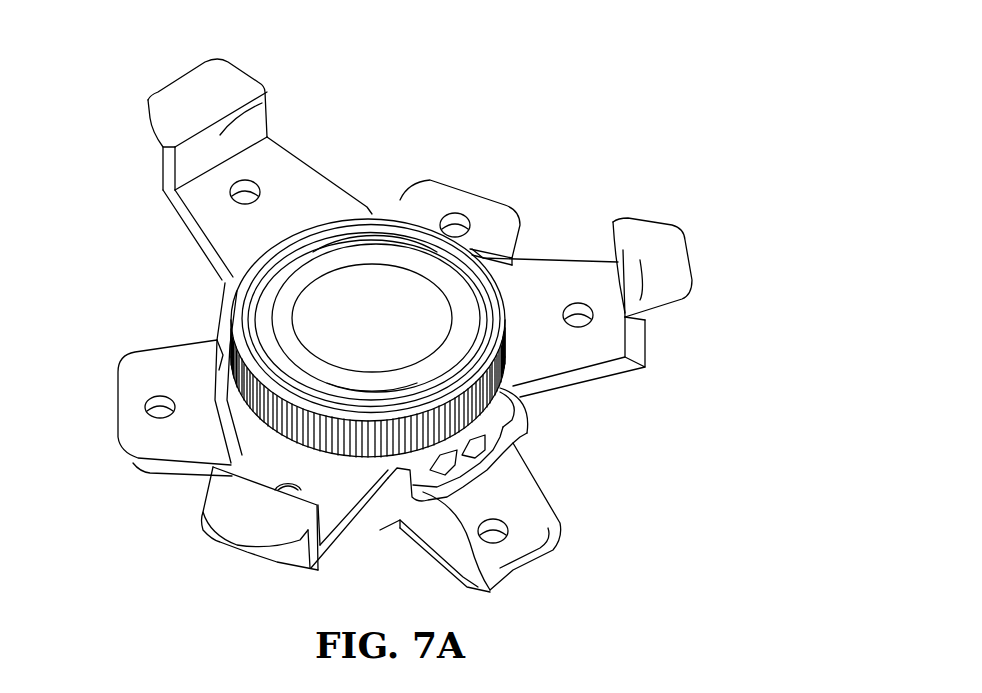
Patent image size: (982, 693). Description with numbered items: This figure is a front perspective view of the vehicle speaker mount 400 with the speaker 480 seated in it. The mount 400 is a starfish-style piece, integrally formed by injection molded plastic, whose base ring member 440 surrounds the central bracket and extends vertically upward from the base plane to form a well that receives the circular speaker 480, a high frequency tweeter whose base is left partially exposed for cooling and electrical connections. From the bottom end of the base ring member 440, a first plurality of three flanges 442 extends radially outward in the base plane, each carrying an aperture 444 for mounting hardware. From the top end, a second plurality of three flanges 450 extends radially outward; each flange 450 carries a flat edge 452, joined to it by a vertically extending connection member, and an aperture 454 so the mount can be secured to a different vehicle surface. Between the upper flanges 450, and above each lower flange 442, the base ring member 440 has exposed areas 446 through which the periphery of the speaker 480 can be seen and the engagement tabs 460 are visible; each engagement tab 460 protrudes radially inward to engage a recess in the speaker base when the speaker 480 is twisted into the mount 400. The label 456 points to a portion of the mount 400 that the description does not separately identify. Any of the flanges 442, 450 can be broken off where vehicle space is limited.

The vehicle speaker mount 400 is at (682, 170).
The base ring member 440 is at (520, 412).
The first plurality of flanges 442 is at (490, 220).
The aperture 444 is at (452, 218).
The exposed areas 446 is at (218, 352).
The second plurality of flanges 450 is at (290, 194).
The flat edge 452 is at (195, 92).
The aperture 454 is at (250, 197).
The tab fold 456 is at (223, 135).
The engagement tab 460 is at (472, 485).
The speaker 480 is at (378, 270).